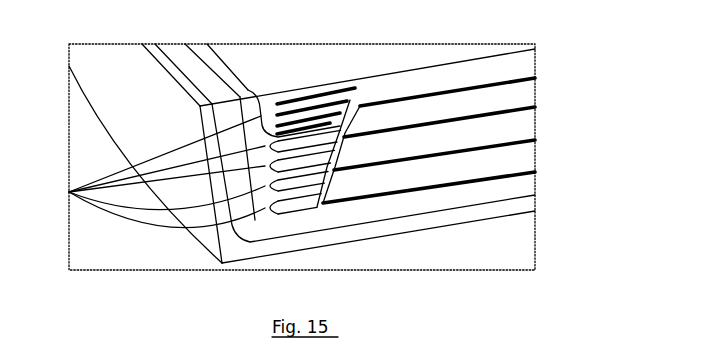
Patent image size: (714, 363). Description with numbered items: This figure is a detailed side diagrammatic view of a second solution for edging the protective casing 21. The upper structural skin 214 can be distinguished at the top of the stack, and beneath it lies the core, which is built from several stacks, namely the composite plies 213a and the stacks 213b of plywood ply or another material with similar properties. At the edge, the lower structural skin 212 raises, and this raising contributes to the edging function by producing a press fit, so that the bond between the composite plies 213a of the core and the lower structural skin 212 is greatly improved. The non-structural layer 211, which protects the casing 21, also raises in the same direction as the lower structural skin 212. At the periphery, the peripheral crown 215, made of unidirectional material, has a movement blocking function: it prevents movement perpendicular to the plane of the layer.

The casing 21 is at (471, 233).
The non-structural layer 211 is at (340, 238).
The lower structural skin 212 is at (433, 203).
The composite plies 213a is at (262, 98).
The core stack 213b is at (525, 95).
The upper structural skin 214 is at (391, 82).
The peripheral crown UD 215 is at (69, 192).